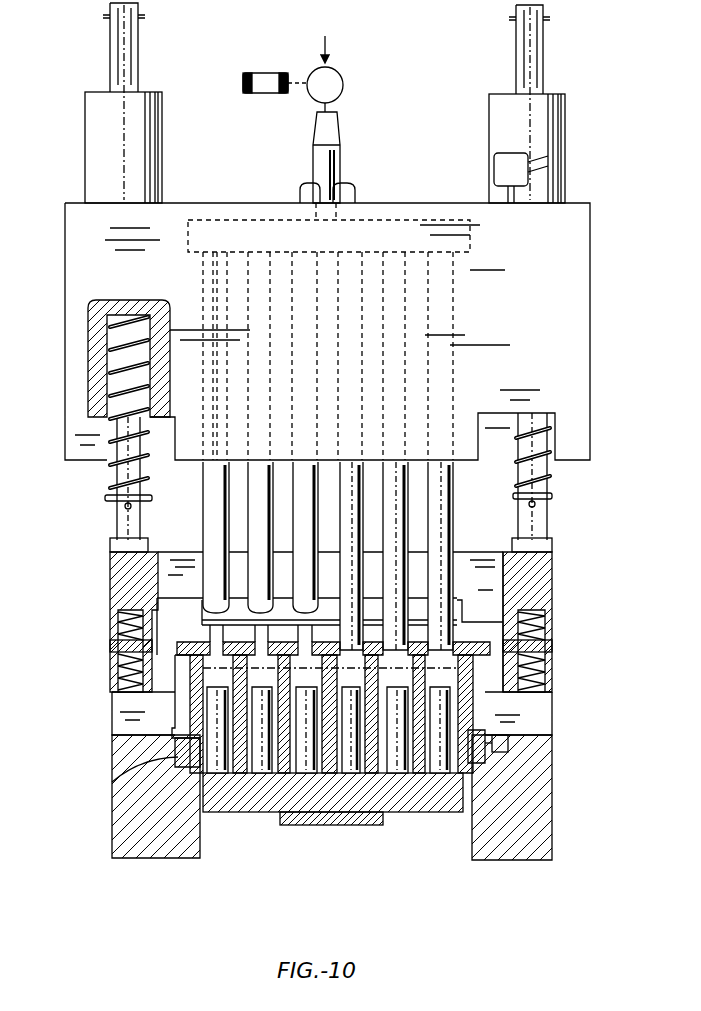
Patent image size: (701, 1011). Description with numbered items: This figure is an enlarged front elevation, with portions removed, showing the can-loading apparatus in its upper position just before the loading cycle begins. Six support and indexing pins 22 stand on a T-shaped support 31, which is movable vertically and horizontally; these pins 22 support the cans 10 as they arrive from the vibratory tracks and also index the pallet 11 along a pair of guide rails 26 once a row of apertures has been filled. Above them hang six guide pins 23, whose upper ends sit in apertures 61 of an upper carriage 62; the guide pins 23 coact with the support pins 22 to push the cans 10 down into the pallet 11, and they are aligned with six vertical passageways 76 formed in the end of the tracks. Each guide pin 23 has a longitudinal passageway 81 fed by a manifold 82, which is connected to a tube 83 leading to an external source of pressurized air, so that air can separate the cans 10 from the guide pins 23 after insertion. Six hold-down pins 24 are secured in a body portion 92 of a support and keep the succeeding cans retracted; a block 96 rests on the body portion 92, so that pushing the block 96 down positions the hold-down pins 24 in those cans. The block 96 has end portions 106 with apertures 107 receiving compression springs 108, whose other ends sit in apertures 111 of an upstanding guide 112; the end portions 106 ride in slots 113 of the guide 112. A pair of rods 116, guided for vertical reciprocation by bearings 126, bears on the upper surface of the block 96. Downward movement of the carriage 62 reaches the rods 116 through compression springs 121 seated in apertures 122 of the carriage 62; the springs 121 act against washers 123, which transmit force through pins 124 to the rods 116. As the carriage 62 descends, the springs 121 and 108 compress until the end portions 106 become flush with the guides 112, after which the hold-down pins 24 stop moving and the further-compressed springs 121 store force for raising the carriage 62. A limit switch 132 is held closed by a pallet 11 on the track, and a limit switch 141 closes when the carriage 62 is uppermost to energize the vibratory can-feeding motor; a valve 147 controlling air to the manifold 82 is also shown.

The cans 10 is at (195, 670).
The pallet 11 is at (130, 766).
The support and indexing pins 22 is at (258, 770).
The guide pins 23 is at (257, 522).
The hold-down pins 24 is at (212, 633).
The guide rails 26 is at (118, 822).
The T-shaped support 31 is at (383, 818).
The apertures 61 is at (210, 378).
The upper carriage 62 is at (577, 353).
The vertical passageways 76 is at (205, 716).
The longitudinal passageways 81 is at (215, 284).
The manifold 82 is at (245, 217).
The tube 83 is at (337, 136).
The body portion 92 is at (462, 608).
The block 96 is at (185, 553).
The end portions 106 is at (108, 585).
The apertures 107 is at (118, 620).
The compression springs 108 is at (115, 661).
The apertures 111 is at (112, 690).
The upstanding guide 112 is at (140, 700).
The slots 113 is at (112, 647).
The rods 116 is at (118, 28).
The compression springs 121 is at (108, 467).
The apertures 122 is at (88, 336).
The washers 123 is at (110, 501).
The pins 124 is at (126, 508).
The bearings 126 is at (93, 135).
The limit switch 132 is at (508, 744).
The limit switch 141 is at (494, 170).
The valve 147 is at (264, 76).